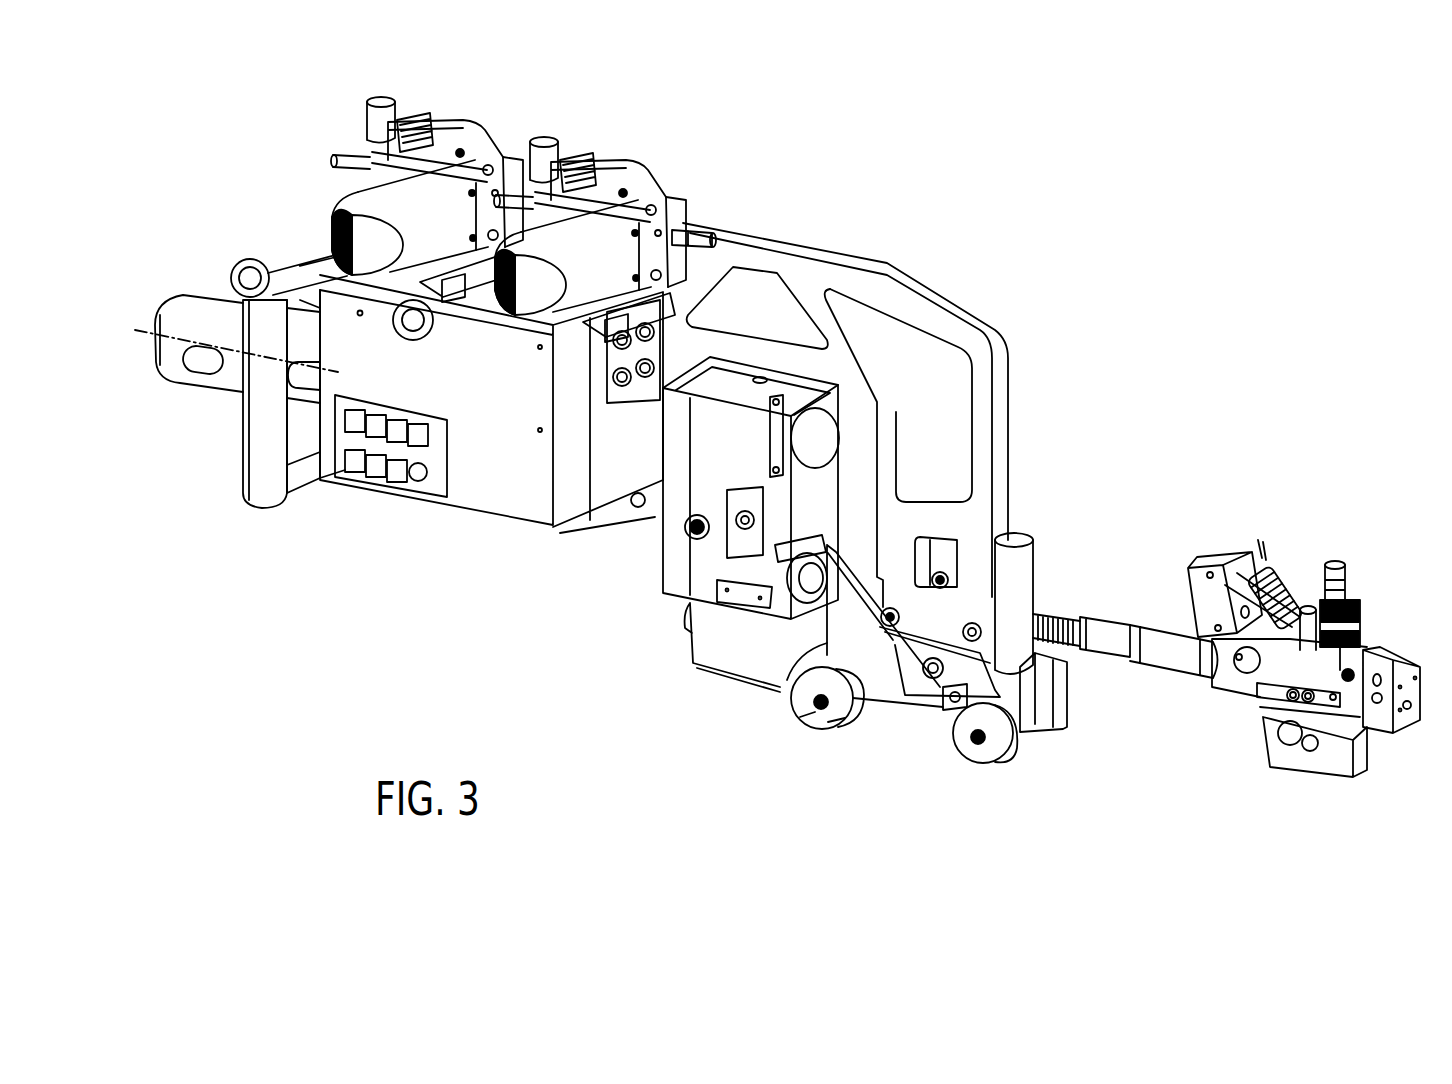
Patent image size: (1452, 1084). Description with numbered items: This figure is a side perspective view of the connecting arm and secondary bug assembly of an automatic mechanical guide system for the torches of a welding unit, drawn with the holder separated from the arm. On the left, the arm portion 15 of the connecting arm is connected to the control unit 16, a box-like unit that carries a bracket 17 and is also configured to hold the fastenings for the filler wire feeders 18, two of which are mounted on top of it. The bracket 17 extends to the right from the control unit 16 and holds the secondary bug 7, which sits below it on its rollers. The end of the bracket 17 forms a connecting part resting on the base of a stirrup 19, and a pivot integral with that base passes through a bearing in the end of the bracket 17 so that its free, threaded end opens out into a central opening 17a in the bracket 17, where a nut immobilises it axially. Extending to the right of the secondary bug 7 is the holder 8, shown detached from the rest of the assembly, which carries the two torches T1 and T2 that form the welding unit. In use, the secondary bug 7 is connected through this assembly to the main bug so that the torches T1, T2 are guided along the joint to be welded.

The secondary bug 7 is at (822, 643).
The holder 8 is at (1217, 550).
The arm portion 15 is at (223, 382).
The control unit 16 is at (497, 493).
The bracket 17 is at (942, 318).
The central opening 17a is at (947, 558).
The filler wire feeders 18 is at (418, 190).
The stirrup 19 is at (918, 648).
The torch T1 is at (1348, 578).
The torch T2 is at (1262, 557).